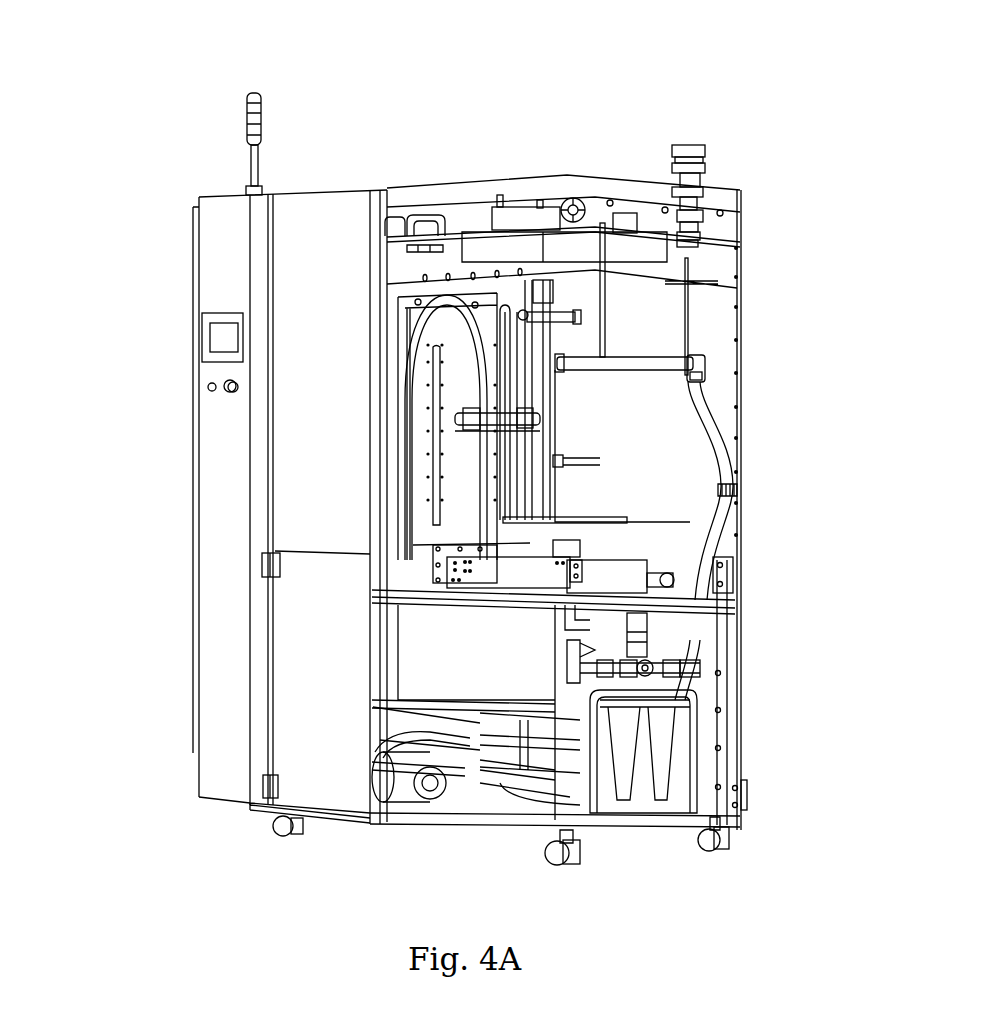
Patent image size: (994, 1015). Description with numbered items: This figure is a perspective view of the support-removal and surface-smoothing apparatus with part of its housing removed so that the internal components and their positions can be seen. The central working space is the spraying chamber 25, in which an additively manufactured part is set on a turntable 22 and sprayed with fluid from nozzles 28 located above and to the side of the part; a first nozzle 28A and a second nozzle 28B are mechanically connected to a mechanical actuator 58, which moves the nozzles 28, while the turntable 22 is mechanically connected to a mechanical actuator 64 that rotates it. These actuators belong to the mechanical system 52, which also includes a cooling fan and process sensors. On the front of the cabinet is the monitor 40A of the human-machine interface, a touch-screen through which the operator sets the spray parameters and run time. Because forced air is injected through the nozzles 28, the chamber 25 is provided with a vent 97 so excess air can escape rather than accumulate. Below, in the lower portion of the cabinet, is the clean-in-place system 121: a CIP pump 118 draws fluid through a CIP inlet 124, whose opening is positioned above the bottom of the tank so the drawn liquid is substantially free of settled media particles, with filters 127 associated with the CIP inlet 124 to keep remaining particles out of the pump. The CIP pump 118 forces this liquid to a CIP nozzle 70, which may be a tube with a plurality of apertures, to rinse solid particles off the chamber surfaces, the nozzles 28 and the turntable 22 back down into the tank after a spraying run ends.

The turntable 22 is at (627, 532).
The spraying chamber 25 is at (627, 437).
The nozzles 28 is at (530, 302).
The first nozzle 28A is at (487, 460).
The second nozzle 28B is at (592, 327).
The monitor 40A is at (217, 337).
The mechanical system 52 is at (765, 412).
The mechanical actuator 58 is at (553, 215).
The mechanical actuator 64 is at (593, 562).
The clean-in-place nozzle 70 is at (658, 360).
The vent 97 is at (698, 142).
The CIP pump 118 is at (402, 783).
The CIP system 121 is at (752, 702).
The CIP inlet 124 is at (505, 700).
The filters 127 is at (660, 752).